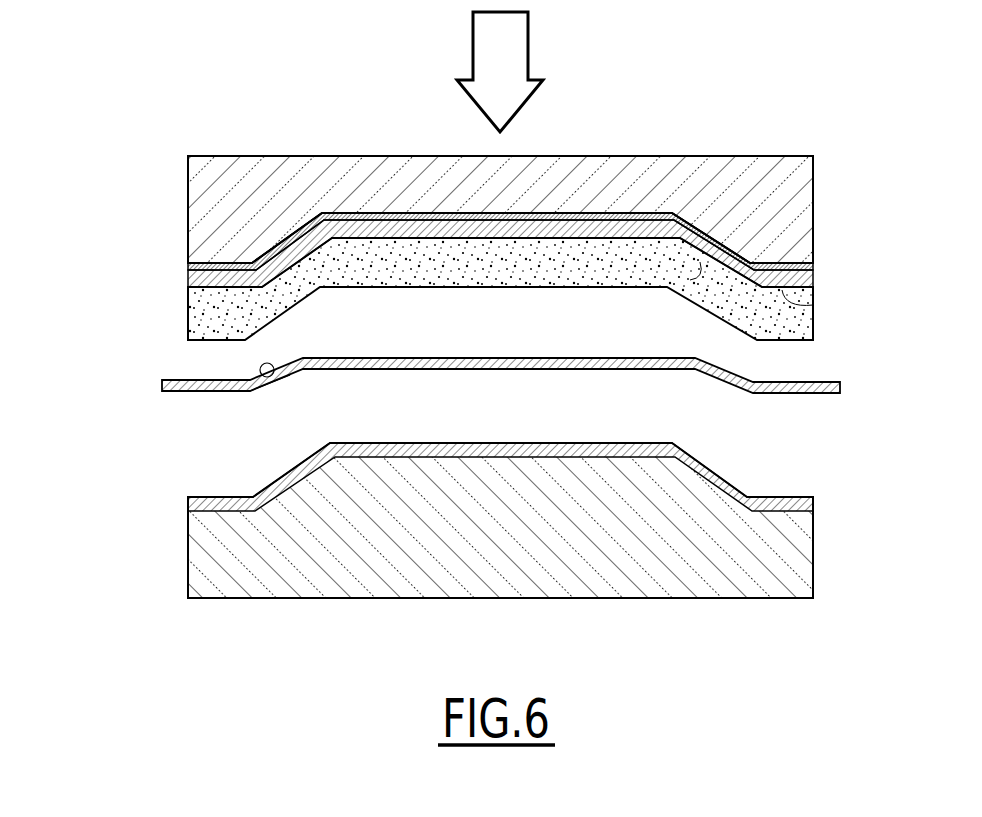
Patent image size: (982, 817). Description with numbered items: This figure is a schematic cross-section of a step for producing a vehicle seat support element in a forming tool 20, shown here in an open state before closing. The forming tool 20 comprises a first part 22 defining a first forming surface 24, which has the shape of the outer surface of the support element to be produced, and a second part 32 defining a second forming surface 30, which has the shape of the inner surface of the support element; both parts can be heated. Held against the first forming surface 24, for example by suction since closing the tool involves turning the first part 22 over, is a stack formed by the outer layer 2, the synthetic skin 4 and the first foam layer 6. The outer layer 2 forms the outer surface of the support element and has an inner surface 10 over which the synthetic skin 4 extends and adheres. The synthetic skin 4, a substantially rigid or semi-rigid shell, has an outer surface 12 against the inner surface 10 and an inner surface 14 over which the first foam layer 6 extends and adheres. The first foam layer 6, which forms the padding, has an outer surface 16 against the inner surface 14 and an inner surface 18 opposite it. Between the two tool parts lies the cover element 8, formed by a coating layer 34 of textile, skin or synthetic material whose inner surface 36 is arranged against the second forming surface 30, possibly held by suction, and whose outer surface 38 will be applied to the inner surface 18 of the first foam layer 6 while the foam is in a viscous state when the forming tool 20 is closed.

The outer layer 2 is at (190, 266).
The synthetic skin 4 is at (190, 283).
The first foam layer 6 is at (190, 326).
The cover element 8 is at (160, 386).
The inner surface of the outer layer 10 is at (745, 262).
The outer surface of the synthetic skin 12 is at (813, 303).
The inner surface of the synthetic skin 14 is at (622, 240).
The outer surface of the first foam layer 16 is at (438, 240).
The inner surface of the first foam layer 18 is at (510, 288).
The forming tool 20 is at (112, 338).
The first part of the forming tool 22 is at (200, 185).
The first forming surface 24 is at (280, 243).
The second forming surface 30 is at (375, 445).
The second part of the forming tool 32 is at (310, 575).
The coating layer 34 is at (175, 395).
The inner surface of the coating layer 36 is at (208, 395).
The outer surface of the coating layer 38 is at (283, 378).